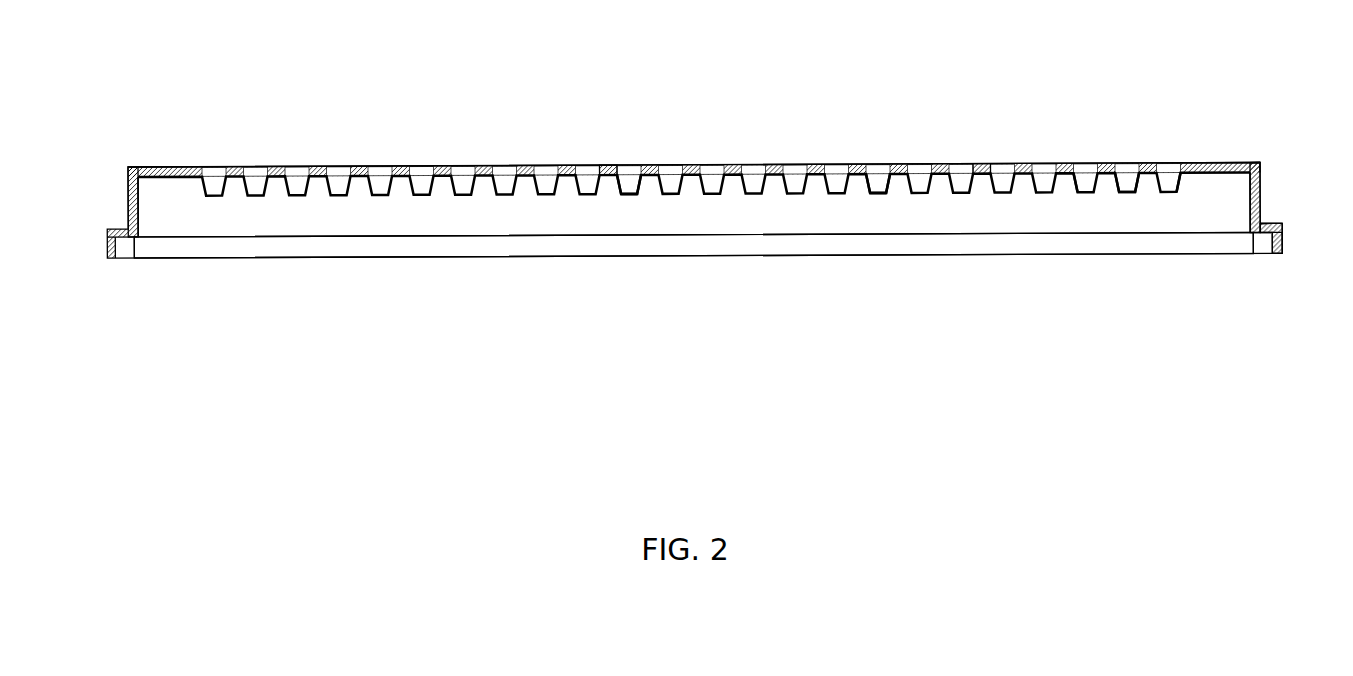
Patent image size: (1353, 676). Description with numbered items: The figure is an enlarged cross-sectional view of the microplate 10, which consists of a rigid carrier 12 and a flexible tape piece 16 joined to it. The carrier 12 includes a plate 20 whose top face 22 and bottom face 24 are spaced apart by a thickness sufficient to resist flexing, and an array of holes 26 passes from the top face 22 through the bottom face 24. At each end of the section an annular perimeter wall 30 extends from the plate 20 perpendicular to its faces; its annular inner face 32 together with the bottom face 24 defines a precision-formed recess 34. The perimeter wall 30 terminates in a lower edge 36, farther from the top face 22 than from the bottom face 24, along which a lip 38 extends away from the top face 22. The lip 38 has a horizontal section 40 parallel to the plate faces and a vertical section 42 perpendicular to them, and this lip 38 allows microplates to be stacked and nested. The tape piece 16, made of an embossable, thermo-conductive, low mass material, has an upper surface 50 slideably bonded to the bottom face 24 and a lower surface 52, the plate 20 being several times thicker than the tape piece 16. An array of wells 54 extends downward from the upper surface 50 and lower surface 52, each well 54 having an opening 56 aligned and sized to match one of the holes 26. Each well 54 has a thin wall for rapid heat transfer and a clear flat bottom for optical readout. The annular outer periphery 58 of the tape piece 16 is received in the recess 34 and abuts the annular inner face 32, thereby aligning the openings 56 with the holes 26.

The microplate 10 is at (1123, 147).
The carrier 12 is at (790, 158).
The tape piece 16 is at (1125, 199).
The plate 20 is at (177, 167).
The top face 22 is at (1220, 163).
The bottom face 24 is at (1175, 174).
The holes 26 is at (622, 167).
The annular perimeter wall 30 is at (131, 195).
The annular inner face 32 is at (1250, 211).
The recess 34 is at (940, 217).
The lower edge 36 is at (1255, 233).
The lip 38 is at (1283, 230).
The horizontal section 40 is at (1265, 228).
The vertical section 42 is at (1283, 248).
The upper surface 50 is at (1075, 173).
The lower surface 52 is at (1070, 176).
The wells 54 is at (628, 196).
The opening 56 is at (631, 180).
The annular outer periphery 58 is at (1261, 164).